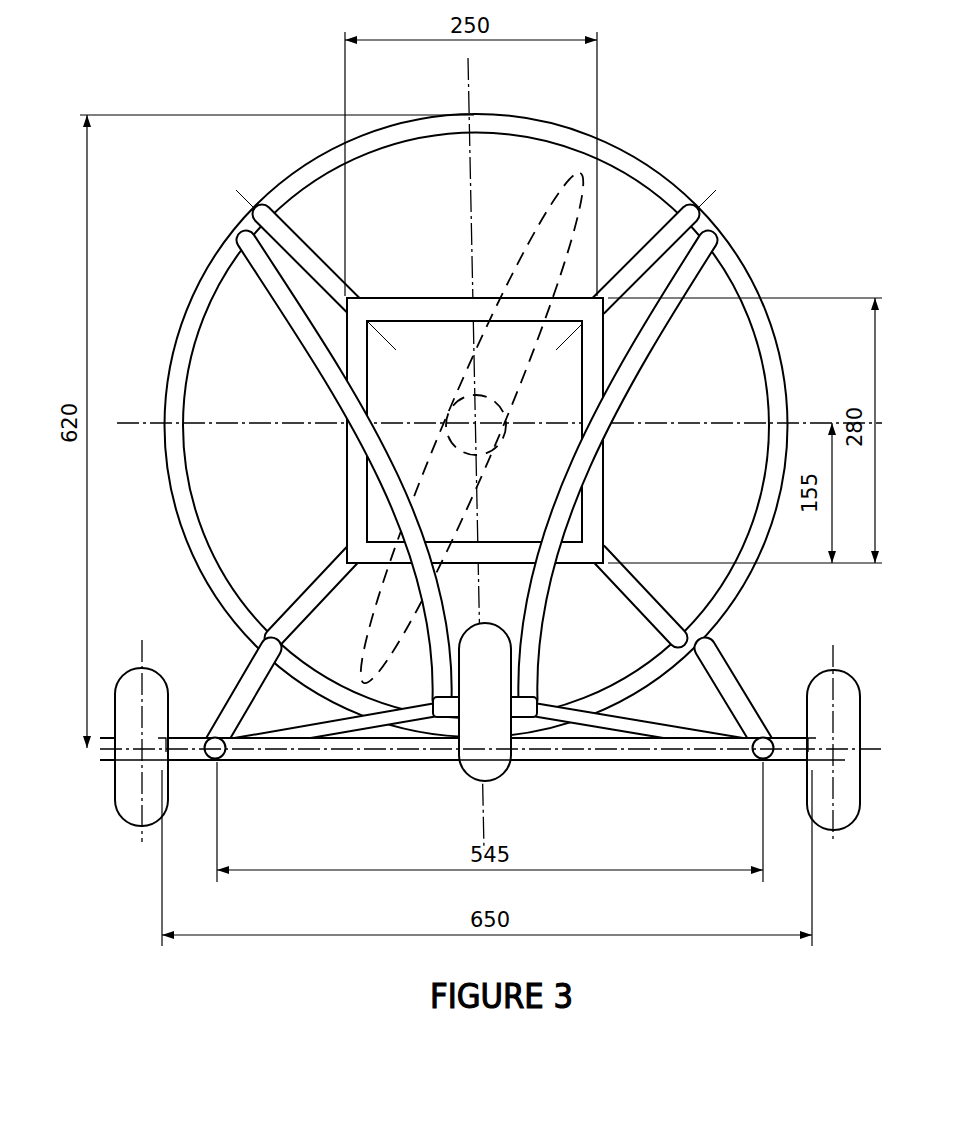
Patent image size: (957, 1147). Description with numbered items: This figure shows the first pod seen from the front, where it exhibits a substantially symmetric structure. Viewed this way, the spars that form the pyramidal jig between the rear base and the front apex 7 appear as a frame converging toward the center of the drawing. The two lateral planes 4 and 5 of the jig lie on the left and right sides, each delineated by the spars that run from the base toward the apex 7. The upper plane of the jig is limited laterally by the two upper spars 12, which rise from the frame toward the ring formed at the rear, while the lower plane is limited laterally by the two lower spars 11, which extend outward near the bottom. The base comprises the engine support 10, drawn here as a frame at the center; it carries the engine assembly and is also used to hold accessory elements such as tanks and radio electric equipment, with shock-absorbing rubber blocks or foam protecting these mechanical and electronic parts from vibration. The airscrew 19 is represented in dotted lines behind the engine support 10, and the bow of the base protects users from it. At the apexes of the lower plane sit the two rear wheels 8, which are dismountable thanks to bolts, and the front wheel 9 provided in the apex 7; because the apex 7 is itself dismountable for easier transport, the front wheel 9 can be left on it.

The lateral plane 4 is at (160, 561).
The lateral plane 5 is at (798, 590).
The apex 7 is at (443, 723).
The rear wheel 8 is at (128, 805).
The front wheel 9 is at (495, 771).
The engine support 10 is at (594, 478).
The lower spar 11 is at (337, 725).
The upper spar 12 is at (304, 338).
The airscrew 19 is at (558, 205).